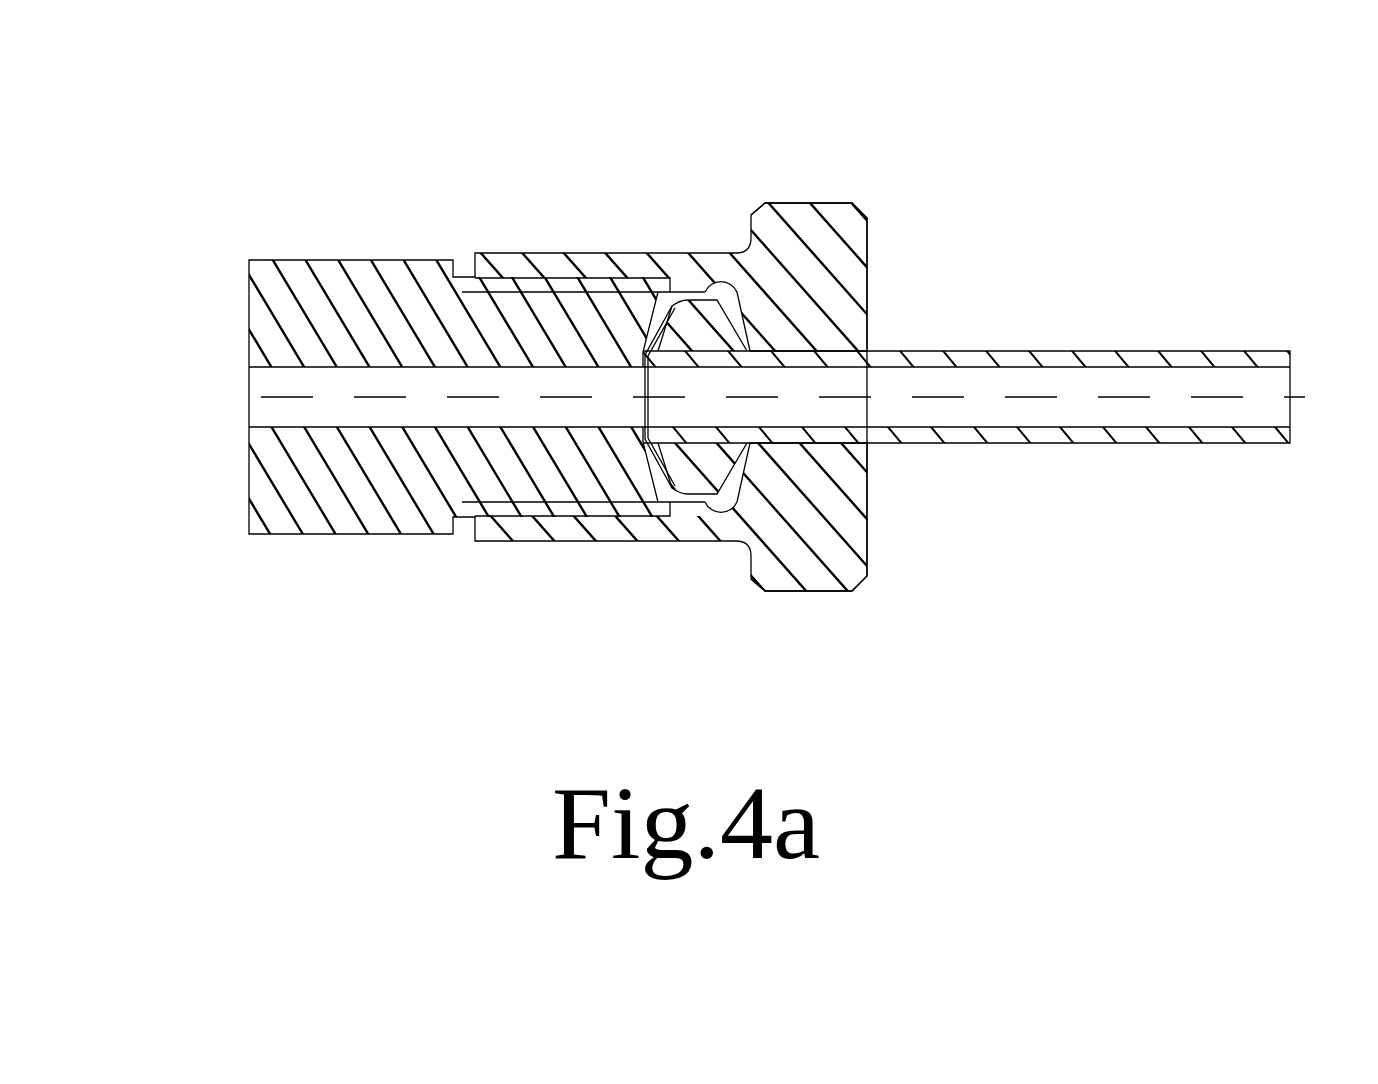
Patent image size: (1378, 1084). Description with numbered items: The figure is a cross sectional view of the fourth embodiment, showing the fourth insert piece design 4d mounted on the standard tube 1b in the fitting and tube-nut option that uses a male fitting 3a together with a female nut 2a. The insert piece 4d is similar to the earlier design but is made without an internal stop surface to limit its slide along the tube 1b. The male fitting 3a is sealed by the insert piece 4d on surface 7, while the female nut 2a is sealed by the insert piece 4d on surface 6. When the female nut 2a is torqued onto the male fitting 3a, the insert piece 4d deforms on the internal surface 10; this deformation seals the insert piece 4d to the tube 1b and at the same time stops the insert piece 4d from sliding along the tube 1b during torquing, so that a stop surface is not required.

The male fitting 3a is at (333, 260).
The female nut 2a is at (867, 270).
The internal surface 10 is at (825, 560).
The surface 7 is at (658, 293).
The surface 6 is at (743, 323).
The fourth insert piece design 4d is at (747, 449).
The standard tube 1b is at (1112, 445).